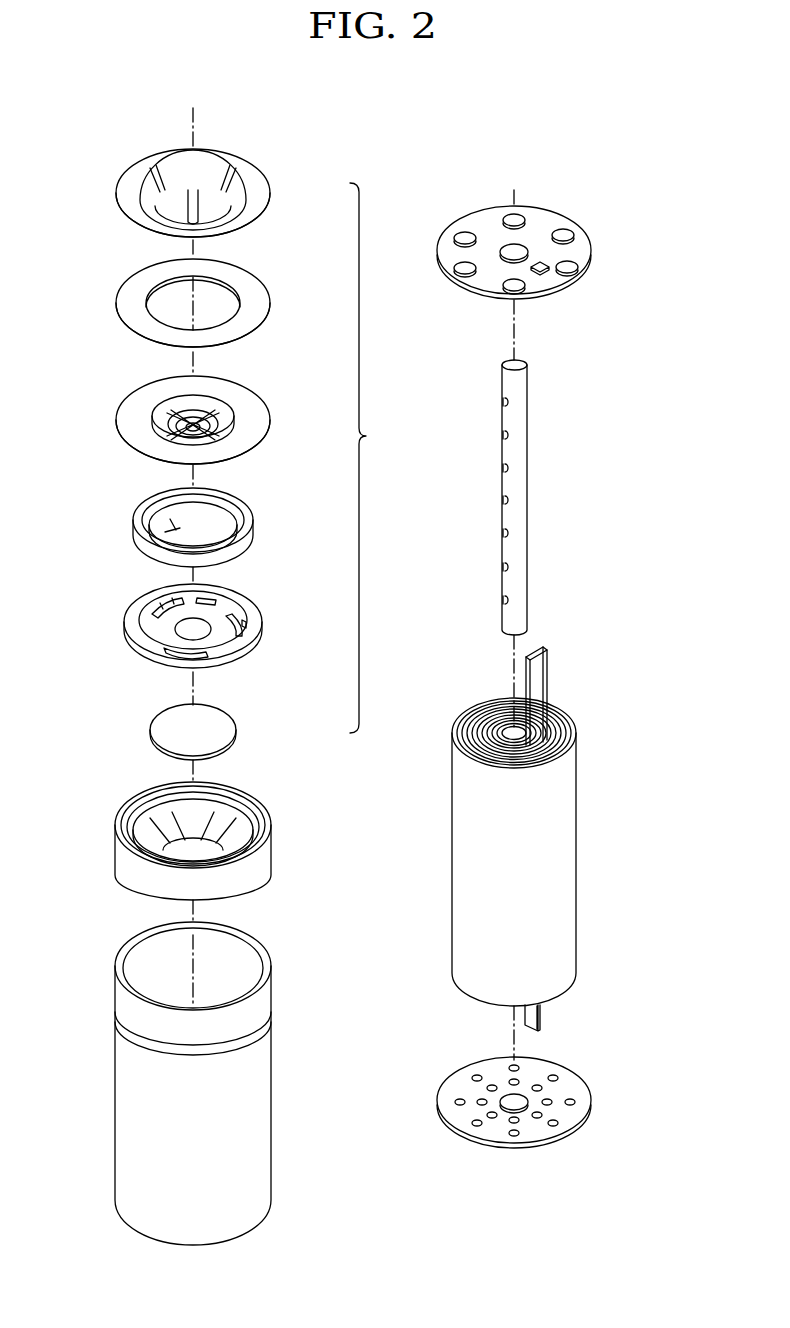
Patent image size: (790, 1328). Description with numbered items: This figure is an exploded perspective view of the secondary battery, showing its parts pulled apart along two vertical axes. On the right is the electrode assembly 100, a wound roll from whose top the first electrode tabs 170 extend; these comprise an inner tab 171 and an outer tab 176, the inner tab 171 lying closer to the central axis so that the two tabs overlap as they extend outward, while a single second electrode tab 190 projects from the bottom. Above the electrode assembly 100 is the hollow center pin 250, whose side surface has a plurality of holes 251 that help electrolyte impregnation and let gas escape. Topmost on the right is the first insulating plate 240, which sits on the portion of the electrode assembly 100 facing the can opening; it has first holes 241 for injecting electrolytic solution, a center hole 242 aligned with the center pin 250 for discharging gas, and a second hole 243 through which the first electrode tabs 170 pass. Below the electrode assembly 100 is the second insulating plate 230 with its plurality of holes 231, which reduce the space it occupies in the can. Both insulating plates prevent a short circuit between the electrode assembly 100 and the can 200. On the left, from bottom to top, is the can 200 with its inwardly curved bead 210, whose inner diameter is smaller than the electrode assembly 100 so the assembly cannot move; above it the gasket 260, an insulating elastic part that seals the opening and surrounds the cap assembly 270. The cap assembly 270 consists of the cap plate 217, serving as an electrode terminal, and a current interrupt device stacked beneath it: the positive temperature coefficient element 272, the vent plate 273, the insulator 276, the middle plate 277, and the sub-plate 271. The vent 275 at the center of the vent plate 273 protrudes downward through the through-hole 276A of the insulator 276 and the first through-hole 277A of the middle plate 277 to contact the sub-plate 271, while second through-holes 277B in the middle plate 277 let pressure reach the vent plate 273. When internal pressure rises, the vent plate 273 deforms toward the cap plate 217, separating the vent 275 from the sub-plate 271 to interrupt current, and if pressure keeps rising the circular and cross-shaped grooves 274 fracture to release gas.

The electrode assembly 100 is at (583, 848).
The first electrode tabs 170 is at (605, 692).
The inner tab 171 is at (522, 662).
The outer tab 176 is at (538, 690).
The second electrode tab 190 is at (541, 1016).
The can 200 is at (231, 1083).
The bead 210 is at (270, 1017).
The cap plate 217 is at (265, 193).
The second insulating plate 230 is at (553, 1102).
The holes 231 is at (556, 1121).
The first insulating plate 240 is at (561, 252).
The first holes 241 is at (566, 232).
The center hole 242 is at (508, 247).
The second hole 243 is at (546, 271).
The center pin 250 is at (561, 497).
The holes 251 is at (508, 435).
The gasket 260 is at (267, 853).
The cap assembly 270 is at (376, 458).
The sub-plate 271 is at (235, 725).
The positive temperature coefficient element 272 is at (263, 303).
The vent plate 273 is at (217, 409).
The grooves 274 is at (207, 415).
The vent 275 is at (188, 424).
The insulator 276 is at (201, 527).
The through-hole 276A is at (174, 527).
The middle plate 277 is at (201, 616).
The first through-hole 277A is at (185, 632).
The second through-holes 277B is at (178, 607).